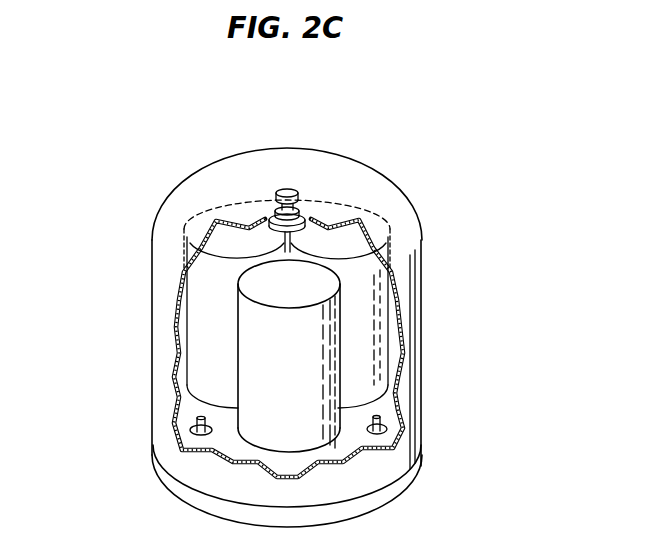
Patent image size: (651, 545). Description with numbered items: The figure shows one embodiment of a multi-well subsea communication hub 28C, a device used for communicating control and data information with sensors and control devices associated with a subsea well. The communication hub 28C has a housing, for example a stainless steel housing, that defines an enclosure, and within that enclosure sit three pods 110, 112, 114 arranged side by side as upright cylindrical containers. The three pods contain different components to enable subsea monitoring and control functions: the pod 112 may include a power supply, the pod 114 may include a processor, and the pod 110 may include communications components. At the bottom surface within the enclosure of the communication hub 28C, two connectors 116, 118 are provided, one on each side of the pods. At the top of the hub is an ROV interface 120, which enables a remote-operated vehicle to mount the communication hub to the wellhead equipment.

The multi-well subsea communication hub 28C is at (294, 150).
The pod 110 is at (200, 320).
The pod 112 is at (253, 360).
The pod 114 is at (372, 330).
The connector 116 is at (196, 422).
The connector 118 is at (382, 420).
The ROV interface 120 is at (277, 188).